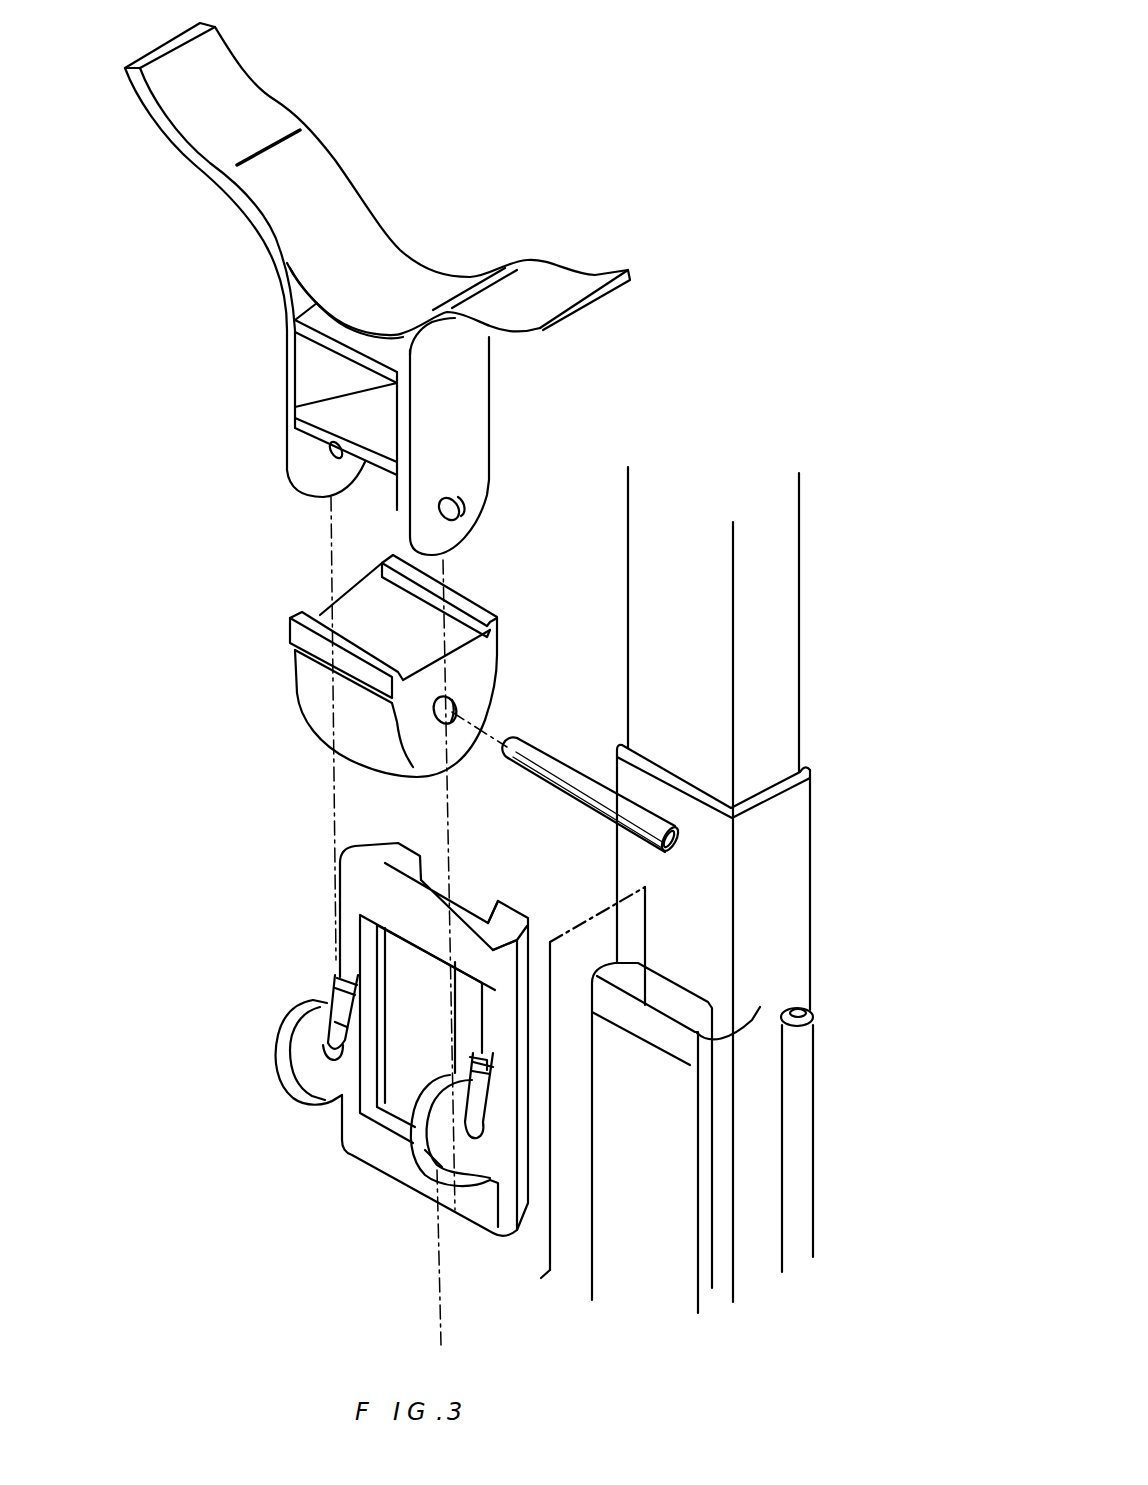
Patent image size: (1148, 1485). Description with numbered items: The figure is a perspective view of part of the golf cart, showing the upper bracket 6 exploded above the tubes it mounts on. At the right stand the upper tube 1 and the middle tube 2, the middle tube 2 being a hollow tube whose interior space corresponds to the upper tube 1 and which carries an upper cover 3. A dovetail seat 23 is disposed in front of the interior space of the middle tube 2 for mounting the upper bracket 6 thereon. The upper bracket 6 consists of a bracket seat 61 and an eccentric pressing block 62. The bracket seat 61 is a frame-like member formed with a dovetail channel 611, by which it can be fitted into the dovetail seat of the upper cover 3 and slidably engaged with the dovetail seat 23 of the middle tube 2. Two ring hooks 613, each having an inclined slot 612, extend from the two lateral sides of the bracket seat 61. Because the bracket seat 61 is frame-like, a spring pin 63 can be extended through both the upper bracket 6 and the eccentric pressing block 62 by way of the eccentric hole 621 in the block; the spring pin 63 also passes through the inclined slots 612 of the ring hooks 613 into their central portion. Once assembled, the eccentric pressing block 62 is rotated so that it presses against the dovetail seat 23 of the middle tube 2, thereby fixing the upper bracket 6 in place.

The upper tube 1 is at (775, 627).
The middle tube 2 is at (808, 1067).
The upper cover 3 is at (788, 867).
The upper bracket 6 is at (477, 420).
The dovetail seat 23 is at (684, 1255).
The bracket seat 61 is at (437, 1054).
The eccentric pressing block 62 is at (438, 666).
The spring pin 63 is at (543, 763).
The dovetail channel 611 is at (442, 888).
The inclined slot 612 is at (480, 1087).
The ring hook 613 is at (437, 1168).
The eccentric hole 621 is at (455, 712).